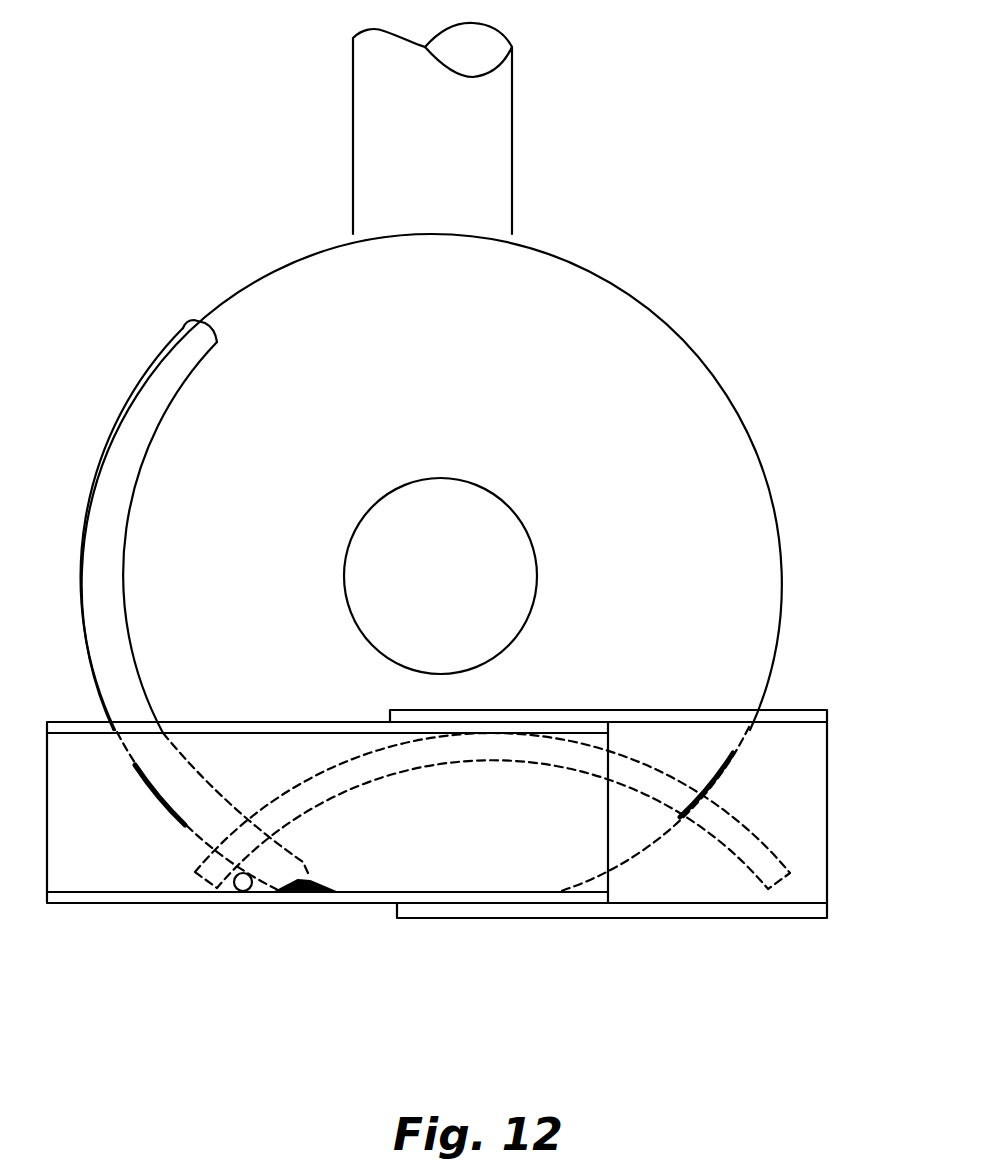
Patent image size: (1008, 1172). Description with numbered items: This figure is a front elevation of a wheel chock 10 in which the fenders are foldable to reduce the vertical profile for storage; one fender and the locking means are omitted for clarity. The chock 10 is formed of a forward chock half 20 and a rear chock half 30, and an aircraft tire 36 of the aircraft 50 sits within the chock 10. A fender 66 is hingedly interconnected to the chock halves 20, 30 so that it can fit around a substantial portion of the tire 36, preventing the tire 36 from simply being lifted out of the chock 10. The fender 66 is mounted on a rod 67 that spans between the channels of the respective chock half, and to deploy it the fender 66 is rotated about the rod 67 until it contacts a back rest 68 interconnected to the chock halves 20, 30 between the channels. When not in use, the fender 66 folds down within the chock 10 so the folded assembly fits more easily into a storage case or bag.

The chock 10 is at (466, 531).
The forward chock half 20 is at (797, 918).
The rear chock half 30 is at (92, 903).
The tire 36 is at (725, 392).
The aircraft 50 is at (512, 212).
The fender 66 is at (142, 397).
The rod 67 is at (241, 891).
The back rest 68 is at (185, 825).